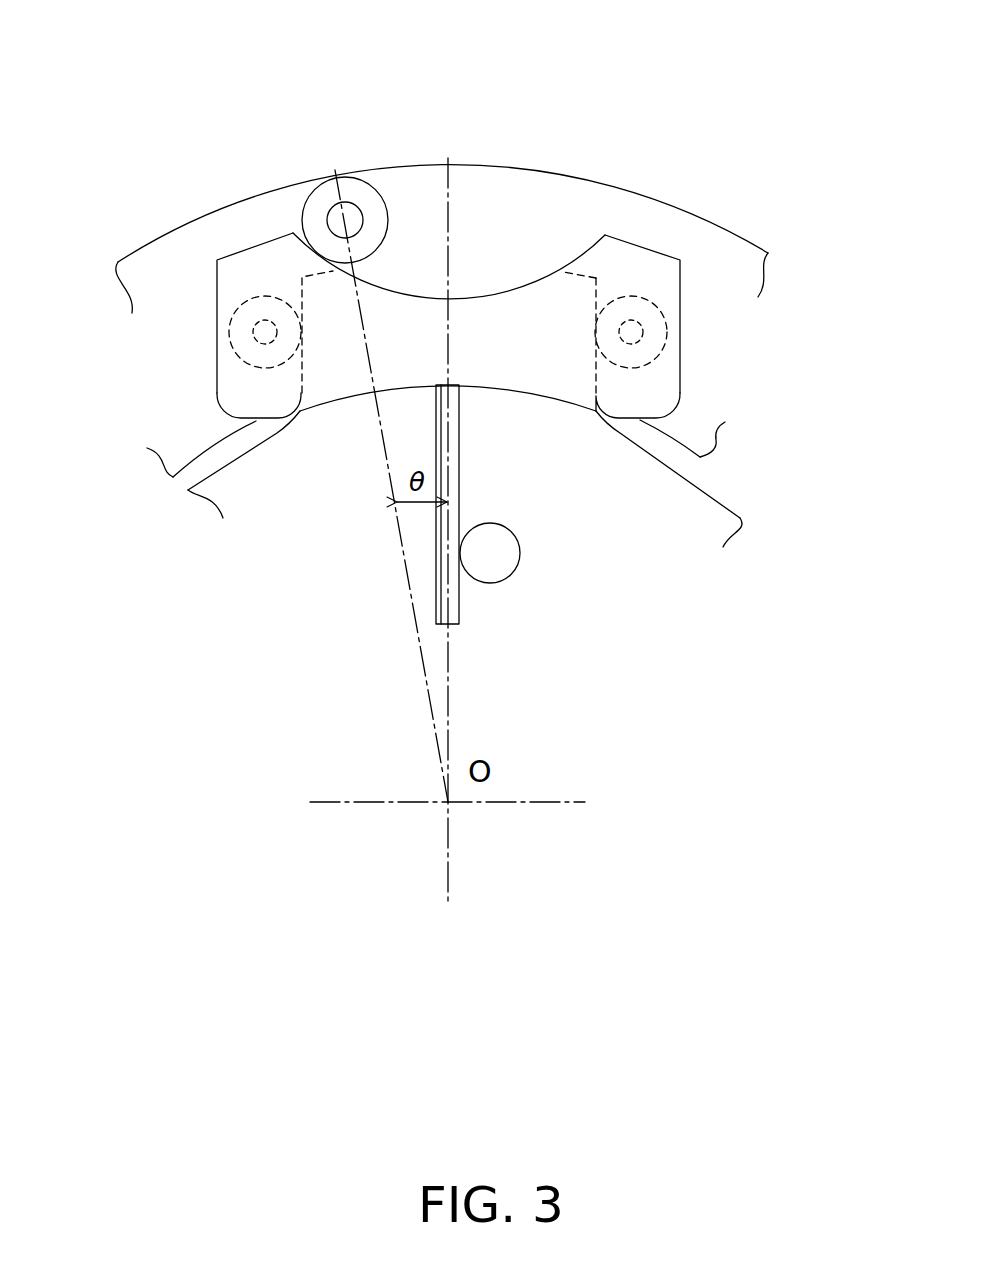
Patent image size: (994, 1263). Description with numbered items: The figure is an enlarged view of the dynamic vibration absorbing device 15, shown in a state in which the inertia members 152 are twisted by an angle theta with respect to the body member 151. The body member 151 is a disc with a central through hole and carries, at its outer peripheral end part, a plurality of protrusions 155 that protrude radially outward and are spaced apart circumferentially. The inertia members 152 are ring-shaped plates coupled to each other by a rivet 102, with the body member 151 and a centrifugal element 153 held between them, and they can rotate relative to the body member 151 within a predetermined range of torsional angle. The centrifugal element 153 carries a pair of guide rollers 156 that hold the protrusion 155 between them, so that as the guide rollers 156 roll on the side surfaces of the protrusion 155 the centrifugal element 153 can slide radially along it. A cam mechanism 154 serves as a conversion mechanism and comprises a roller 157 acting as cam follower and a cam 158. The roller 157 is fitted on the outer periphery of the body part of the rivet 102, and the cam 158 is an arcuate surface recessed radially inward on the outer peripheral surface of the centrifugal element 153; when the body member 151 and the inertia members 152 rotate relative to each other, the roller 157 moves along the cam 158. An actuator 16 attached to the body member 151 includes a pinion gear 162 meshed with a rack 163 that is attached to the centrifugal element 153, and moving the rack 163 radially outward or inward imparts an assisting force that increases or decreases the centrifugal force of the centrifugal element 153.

The dynamic vibration absorbing device 15 is at (698, 97).
The body member 151 is at (688, 497).
The inertia member 152 is at (653, 208).
The centrifugal element 153 is at (213, 377).
The cam mechanism 154 is at (292, 222).
The protrusion 155 is at (487, 273).
The guide roller 156 is at (655, 318).
The roller 157 is at (387, 203).
The cam 158 is at (567, 270).
The rivet 102 is at (347, 227).
The actuator 16 is at (490, 622).
The pinion gear 162 is at (518, 553).
The rack 163 is at (458, 458).